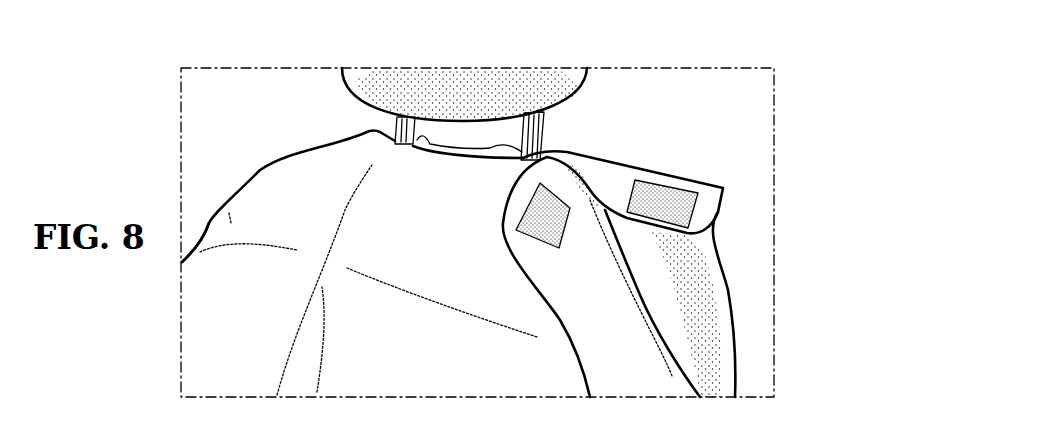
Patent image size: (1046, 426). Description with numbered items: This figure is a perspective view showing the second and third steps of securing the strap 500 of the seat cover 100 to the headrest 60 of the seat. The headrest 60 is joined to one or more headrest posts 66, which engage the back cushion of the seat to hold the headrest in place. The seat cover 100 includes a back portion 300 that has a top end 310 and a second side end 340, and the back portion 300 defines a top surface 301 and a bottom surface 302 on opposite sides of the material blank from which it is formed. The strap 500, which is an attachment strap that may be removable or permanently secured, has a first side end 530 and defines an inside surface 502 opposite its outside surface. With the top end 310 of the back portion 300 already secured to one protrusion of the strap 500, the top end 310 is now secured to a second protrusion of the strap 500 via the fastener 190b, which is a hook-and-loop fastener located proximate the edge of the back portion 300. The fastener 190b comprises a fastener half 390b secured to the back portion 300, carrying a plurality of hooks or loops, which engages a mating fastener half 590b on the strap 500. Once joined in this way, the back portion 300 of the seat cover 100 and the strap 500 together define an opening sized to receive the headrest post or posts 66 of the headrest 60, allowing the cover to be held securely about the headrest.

The headrest 60 is at (485, 80).
The headrest post 66 is at (542, 130).
The seat cover 100 is at (495, 241).
The back portion 300 is at (283, 197).
The top surface 301 is at (413, 351).
The bottom surface 302 is at (613, 312).
The top end 310 is at (443, 167).
The second side end 340 is at (243, 202).
The strap 500 is at (610, 175).
The inside surface 502 is at (753, 233).
The first side end 530 is at (703, 203).
The fastener 190b is at (635, 217).
The fastener half 390b is at (513, 254).
The mating fastener half 590b is at (762, 217).